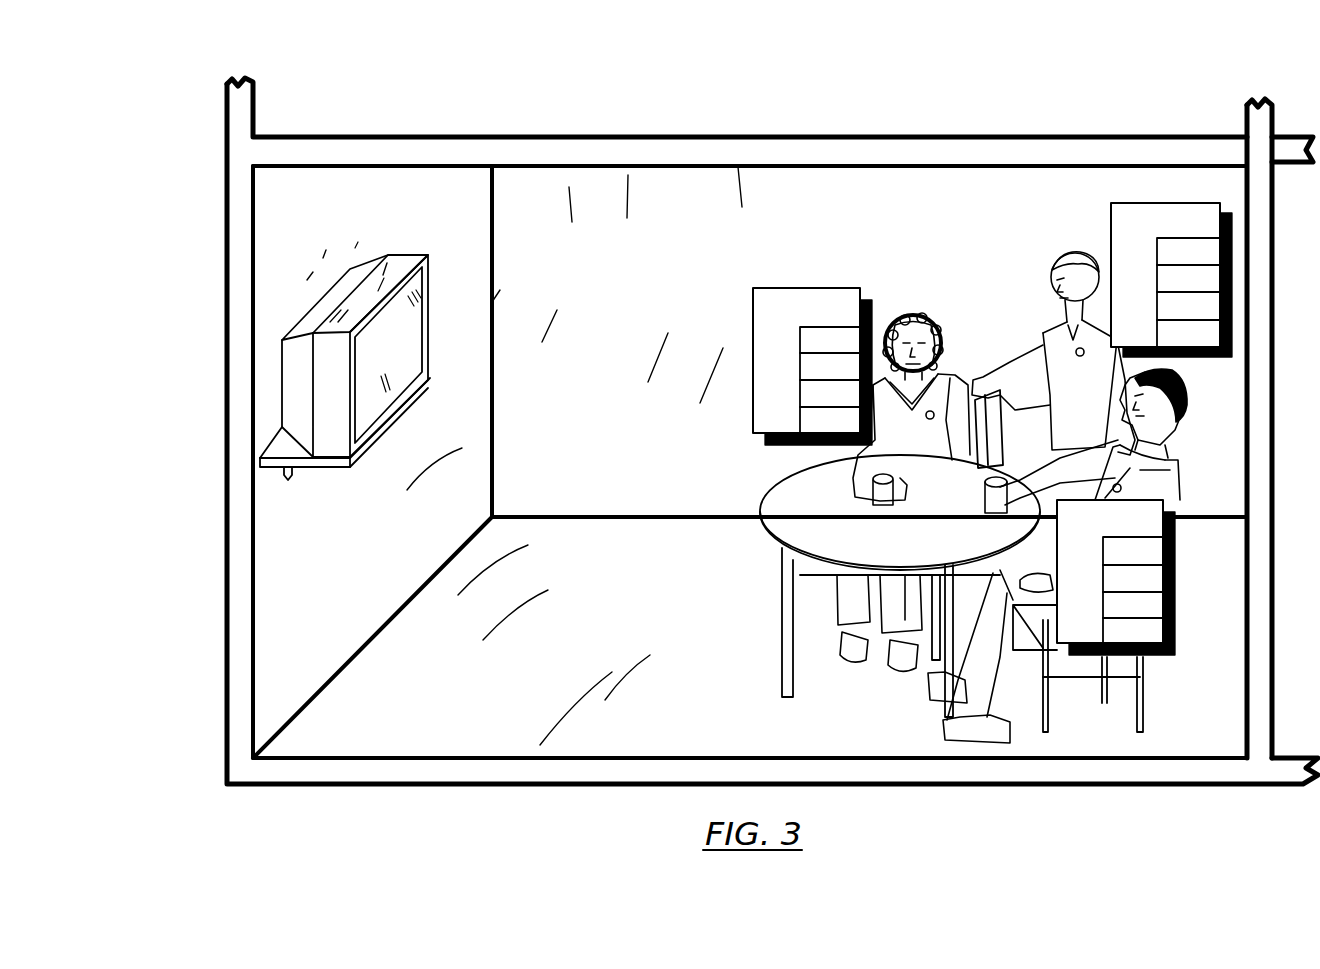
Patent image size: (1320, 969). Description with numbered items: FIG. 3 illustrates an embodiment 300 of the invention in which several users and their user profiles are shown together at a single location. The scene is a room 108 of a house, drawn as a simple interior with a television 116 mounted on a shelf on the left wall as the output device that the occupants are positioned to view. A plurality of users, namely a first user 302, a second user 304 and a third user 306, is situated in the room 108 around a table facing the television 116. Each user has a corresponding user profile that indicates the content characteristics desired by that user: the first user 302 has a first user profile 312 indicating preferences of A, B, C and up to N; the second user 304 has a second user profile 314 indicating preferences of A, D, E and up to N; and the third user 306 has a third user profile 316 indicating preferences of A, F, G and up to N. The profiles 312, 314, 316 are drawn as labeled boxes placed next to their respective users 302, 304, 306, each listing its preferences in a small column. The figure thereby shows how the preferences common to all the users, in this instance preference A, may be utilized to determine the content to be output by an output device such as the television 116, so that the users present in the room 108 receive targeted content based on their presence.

The embodiment 300 is at (122, 101).
The room 108 is at (250, 703).
The television 116 is at (295, 375).
The first user 302 is at (913, 315).
The second user 304 is at (1047, 340).
The third user 306 is at (1182, 410).
The first user profile 312 is at (800, 288).
The second user profile 314 is at (1232, 233).
The third user profile 316 is at (1170, 503).